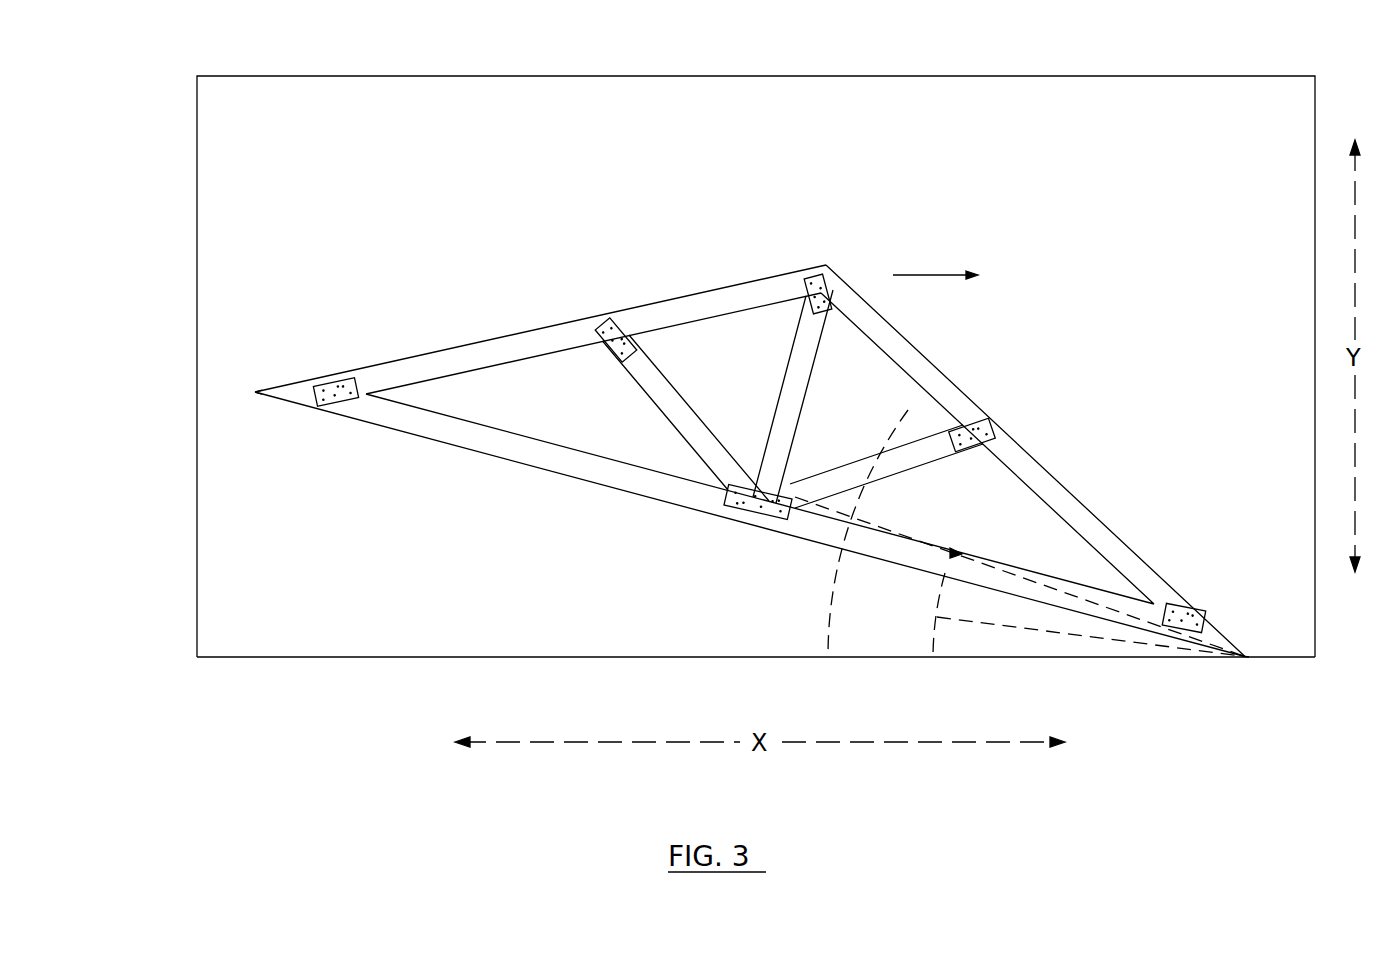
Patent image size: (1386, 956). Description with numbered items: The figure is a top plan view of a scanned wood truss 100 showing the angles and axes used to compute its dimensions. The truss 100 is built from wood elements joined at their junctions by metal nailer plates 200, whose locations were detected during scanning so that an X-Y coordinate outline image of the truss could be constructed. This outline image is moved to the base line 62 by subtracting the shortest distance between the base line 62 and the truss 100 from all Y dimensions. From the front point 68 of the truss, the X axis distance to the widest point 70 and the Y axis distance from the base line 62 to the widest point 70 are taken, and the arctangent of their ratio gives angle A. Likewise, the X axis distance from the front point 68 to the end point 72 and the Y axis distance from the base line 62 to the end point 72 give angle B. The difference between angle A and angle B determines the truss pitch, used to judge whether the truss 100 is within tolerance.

The base line 62 is at (1117, 658).
The front point 68 is at (1252, 657).
The widest point 70 is at (826, 258).
The end point 72 is at (250, 393).
The truss 100 is at (438, 433).
The metal nailer plate 200 is at (1202, 612).
The angle A is at (908, 410).
The angle B is at (935, 632).